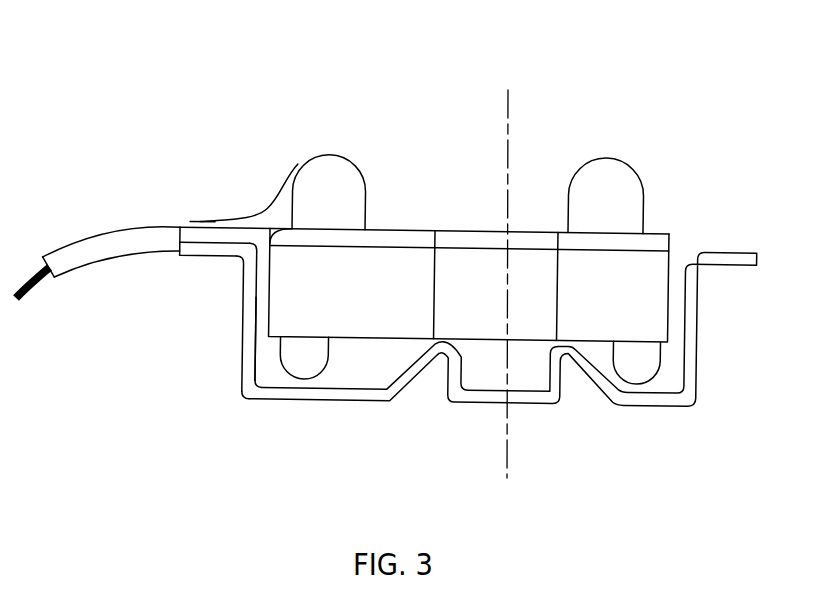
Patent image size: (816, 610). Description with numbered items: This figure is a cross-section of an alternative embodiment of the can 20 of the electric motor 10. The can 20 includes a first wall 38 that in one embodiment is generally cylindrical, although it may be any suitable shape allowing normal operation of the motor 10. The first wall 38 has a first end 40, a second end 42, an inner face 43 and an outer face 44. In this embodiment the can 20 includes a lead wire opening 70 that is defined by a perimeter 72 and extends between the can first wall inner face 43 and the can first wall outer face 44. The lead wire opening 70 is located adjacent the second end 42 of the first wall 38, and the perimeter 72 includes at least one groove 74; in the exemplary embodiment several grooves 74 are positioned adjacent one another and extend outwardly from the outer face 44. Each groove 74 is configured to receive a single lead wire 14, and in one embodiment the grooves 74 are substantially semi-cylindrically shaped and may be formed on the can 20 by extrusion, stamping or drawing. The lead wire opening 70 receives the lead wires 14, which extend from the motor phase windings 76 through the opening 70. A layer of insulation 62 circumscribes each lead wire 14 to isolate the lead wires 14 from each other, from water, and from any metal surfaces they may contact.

The motor 10 is at (401, 61).
The lead wire 14 is at (30, 292).
The can 20 is at (698, 370).
The first wall 38 is at (248, 345).
The first end 40 is at (237, 404).
The second end 42 is at (231, 273).
The inner face 43 is at (257, 370).
The outer face 44 is at (240, 326).
The layer of insulation 62 is at (86, 243).
The lead wire opening 70 is at (168, 254).
The perimeter 72 is at (208, 228).
The groove 74 is at (196, 220).
The motor phase windings 76 is at (355, 215).